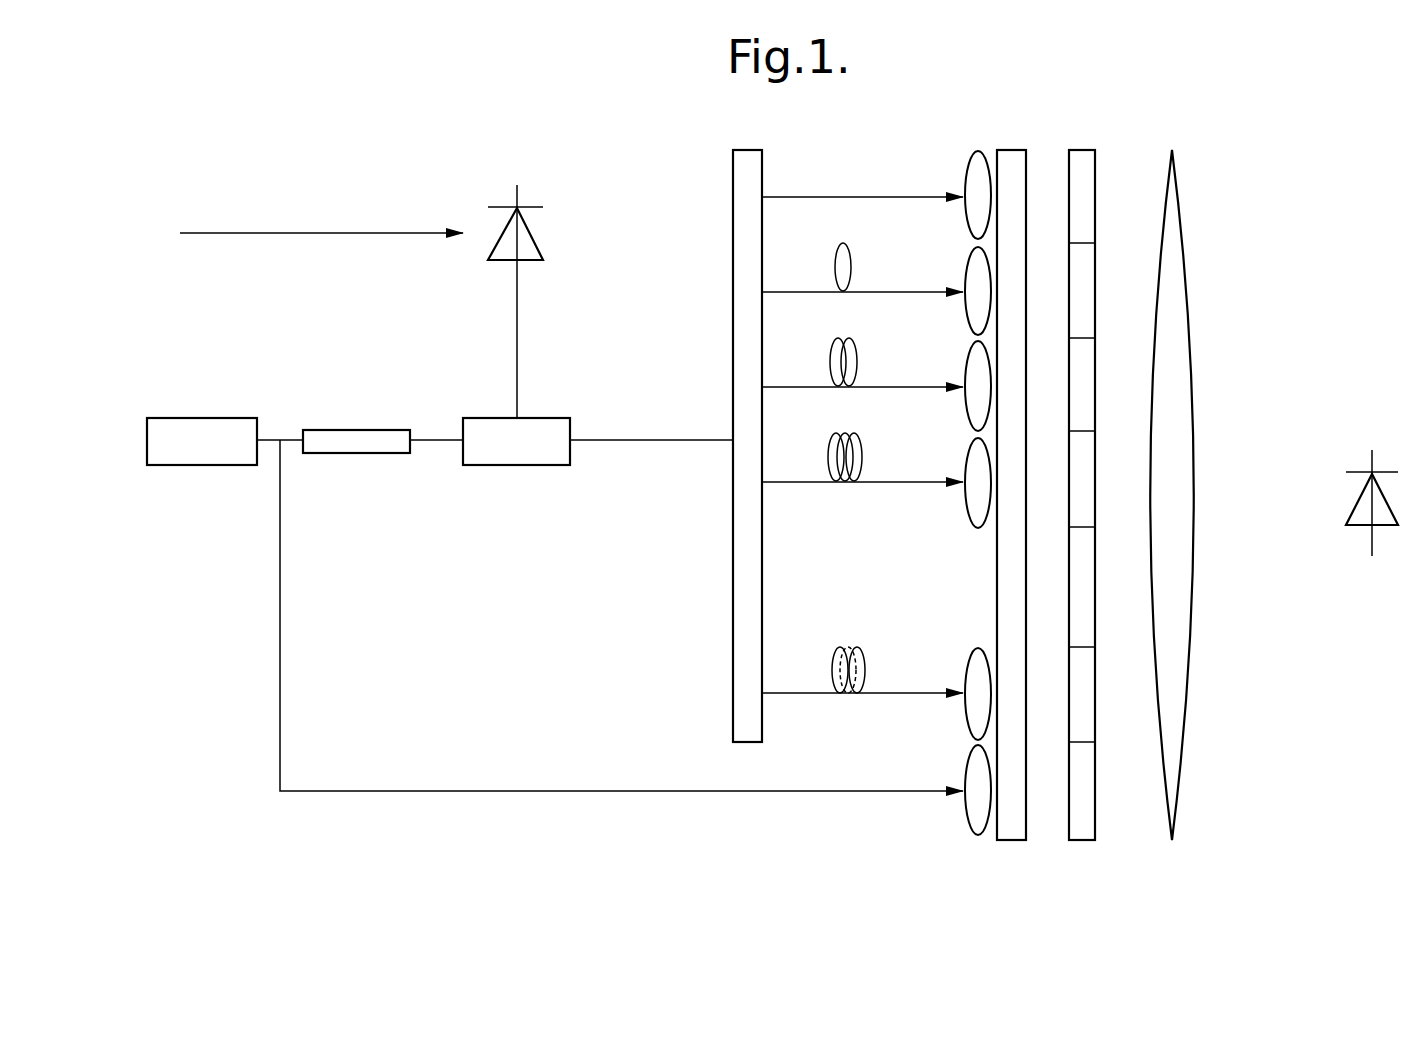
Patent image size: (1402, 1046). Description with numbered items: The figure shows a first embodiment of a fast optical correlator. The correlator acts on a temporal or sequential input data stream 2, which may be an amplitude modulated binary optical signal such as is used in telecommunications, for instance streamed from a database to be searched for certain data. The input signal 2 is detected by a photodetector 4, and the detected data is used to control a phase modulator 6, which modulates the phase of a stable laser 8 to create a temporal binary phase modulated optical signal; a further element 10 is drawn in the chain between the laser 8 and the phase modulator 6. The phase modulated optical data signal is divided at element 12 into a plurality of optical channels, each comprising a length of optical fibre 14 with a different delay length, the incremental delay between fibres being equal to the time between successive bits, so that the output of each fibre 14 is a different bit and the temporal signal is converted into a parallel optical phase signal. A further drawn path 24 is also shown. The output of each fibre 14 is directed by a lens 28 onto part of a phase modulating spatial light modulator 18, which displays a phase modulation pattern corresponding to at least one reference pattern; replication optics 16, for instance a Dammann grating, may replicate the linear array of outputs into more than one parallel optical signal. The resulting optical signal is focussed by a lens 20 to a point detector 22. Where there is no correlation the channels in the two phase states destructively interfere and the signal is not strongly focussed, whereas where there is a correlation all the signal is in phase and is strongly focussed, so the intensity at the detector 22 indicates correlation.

The input data stream 2 is at (341, 198).
The photodetector 4 is at (522, 236).
The phase modulator 6 is at (508, 450).
The stable laser 8 is at (210, 433).
The coupling element 10 is at (350, 440).
The distributor 12 is at (736, 178).
The optical fibre 14 is at (787, 197).
The replication optics 16 is at (1013, 159).
The phase modulating spatial light modulator 18 is at (1082, 157).
The lens 20 is at (1176, 291).
The point detector 22 is at (1366, 506).
The reference line 24 is at (278, 660).
The lens 28 is at (975, 807).